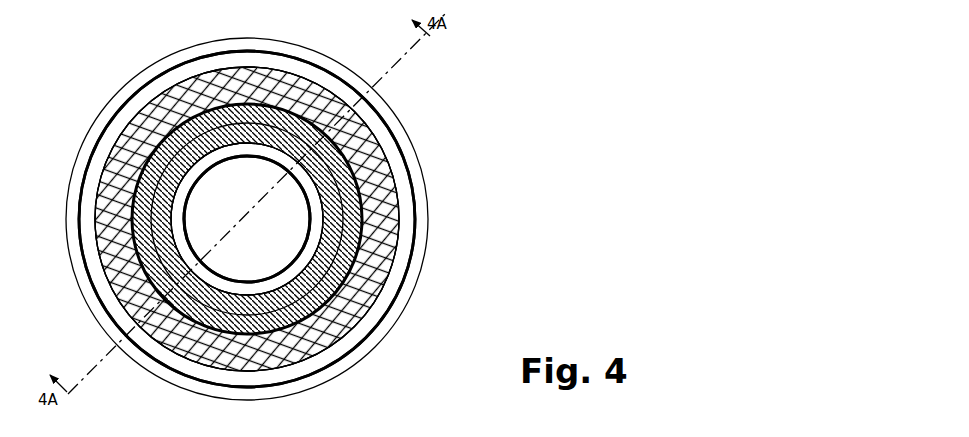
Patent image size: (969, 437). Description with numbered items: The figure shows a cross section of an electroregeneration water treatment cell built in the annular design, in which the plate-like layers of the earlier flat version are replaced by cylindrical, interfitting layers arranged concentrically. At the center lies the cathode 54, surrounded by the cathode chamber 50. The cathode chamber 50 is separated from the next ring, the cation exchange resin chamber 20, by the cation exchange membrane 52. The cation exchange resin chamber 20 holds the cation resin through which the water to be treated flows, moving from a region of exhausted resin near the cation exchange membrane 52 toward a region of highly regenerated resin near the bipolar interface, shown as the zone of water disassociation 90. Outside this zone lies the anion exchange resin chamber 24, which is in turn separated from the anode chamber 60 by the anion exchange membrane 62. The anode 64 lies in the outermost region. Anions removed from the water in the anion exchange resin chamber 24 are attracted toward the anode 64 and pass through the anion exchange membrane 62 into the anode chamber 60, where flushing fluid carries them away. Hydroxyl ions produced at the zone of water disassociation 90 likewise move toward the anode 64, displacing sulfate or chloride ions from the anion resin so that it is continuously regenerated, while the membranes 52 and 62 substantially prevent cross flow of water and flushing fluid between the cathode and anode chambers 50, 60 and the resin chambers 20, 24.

The anode 64 is at (360, 86).
The anode chamber 60 is at (355, 100).
The anion exchange membrane 62 is at (360, 114).
The anion exchange resin chamber 24 is at (343, 138).
The zone of water disassociation 90 is at (338, 152).
The cation exchange resin chamber 20 is at (327, 170).
The cation exchange membrane 52 is at (315, 186).
The cathode chamber 50 is at (311, 196).
The cathode 54 is at (306, 204).